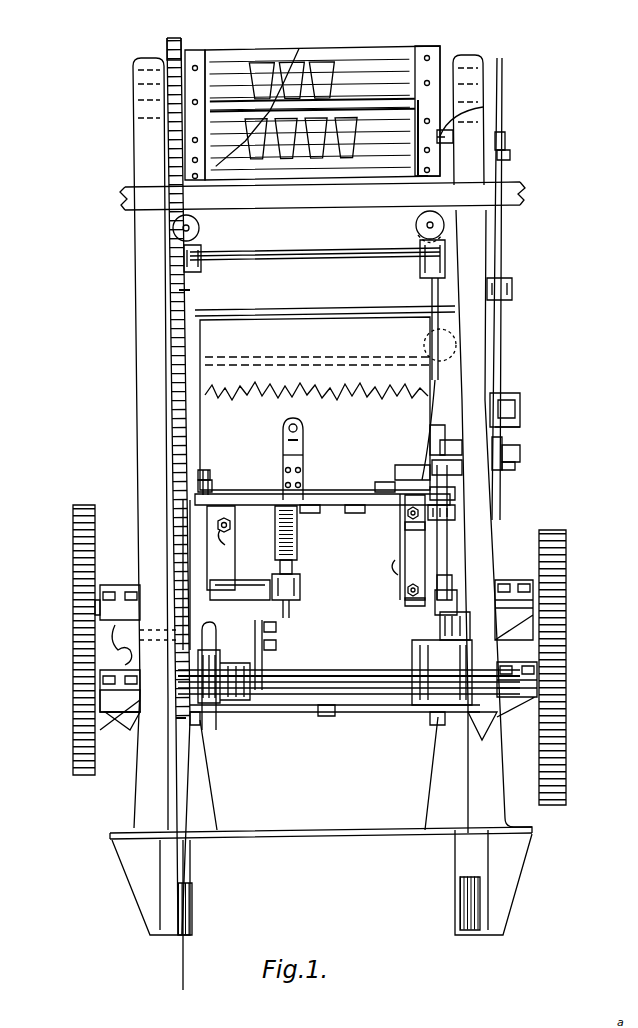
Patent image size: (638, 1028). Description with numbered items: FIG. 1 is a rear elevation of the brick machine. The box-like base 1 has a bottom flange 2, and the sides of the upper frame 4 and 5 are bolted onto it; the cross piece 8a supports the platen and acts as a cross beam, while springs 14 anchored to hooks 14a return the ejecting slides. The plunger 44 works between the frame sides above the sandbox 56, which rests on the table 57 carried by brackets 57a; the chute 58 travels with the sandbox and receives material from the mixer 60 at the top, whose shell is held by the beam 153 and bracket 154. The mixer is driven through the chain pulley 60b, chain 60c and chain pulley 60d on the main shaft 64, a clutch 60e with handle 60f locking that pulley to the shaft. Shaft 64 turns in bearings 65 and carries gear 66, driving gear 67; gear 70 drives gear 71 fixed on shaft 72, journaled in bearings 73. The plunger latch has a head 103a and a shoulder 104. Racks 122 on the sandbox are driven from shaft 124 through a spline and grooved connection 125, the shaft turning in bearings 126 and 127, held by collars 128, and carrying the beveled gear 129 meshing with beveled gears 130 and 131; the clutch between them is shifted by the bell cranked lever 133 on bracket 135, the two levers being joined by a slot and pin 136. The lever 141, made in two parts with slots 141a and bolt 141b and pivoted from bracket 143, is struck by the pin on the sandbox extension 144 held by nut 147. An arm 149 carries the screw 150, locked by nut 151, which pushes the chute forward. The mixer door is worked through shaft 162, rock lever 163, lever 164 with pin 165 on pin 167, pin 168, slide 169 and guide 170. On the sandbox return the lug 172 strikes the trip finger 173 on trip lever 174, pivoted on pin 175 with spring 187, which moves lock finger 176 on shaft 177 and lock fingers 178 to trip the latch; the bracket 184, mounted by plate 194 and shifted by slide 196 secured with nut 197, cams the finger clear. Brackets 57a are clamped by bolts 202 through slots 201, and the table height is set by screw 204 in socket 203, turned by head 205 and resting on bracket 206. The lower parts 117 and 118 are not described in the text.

The base 1 is at (135, 790).
The flange 2 is at (538, 833).
The side of upper frame 4 is at (135, 312).
The side of upper frame 5 is at (477, 341).
The cross piece 8a is at (349, 652).
The spring 14 is at (226, 544).
The hook 14a is at (228, 535).
The plunger 44 is at (325, 398).
The sandbox 56 is at (322, 486).
The table 57 is at (348, 492).
The bracket 57a is at (405, 560).
The chute 58 is at (316, 405).
The mixer 60 is at (365, 60).
The chain pulley 60b is at (185, 44).
The chain 60c is at (192, 292).
The chain pulley 60d is at (178, 722).
The clutch 60e is at (231, 673).
The operating handle 60f is at (140, 645).
The shaft 64 is at (349, 672).
The bearing 65 is at (128, 725).
The gear 66 is at (568, 689).
The gear 67 is at (568, 616).
The gear 70 is at (75, 716).
The gear 71 is at (73, 550).
The shaft 72 is at (95, 605).
The bearing 73 is at (125, 595).
The head of latch 103a is at (201, 228).
The shoulder 104 is at (416, 224).
The foot 117 is at (165, 910).
The pad 118 is at (193, 908).
The rack 122 is at (212, 482).
The shaft 124 is at (450, 540).
The spline and grooved connection 125 is at (457, 492).
The bearing 126 is at (457, 508).
The bearing 127 is at (457, 598).
The collar 128 is at (455, 582).
The beveled gear 129 is at (465, 626).
The beveled gear 130 is at (214, 660).
The beveled gear 131 is at (470, 652).
The bell cranked lever 133 is at (230, 712).
The bracket 135 is at (200, 725).
The slot and pin 136 is at (322, 717).
The lever 141 is at (262, 662).
The slot 141a is at (276, 644).
The bolt 141b is at (276, 627).
The bracket 143 is at (238, 582).
The extension 144 is at (212, 472).
The nut 147 is at (205, 468).
The arm 149 is at (285, 442).
The screw 150 is at (286, 428).
The nut 151 is at (330, 408).
The beam 153 is at (322, 196).
The bracket 154 is at (205, 178).
The shaft 162 is at (485, 106).
The rock lever 163 is at (508, 150).
The lever 164 is at (503, 252).
The pin 165 is at (512, 163).
The pin 167 is at (514, 288).
The pin 168 is at (520, 405).
The slide 169 is at (520, 420).
The guide 170 is at (508, 393).
The lug 172 is at (400, 470).
The trip finger 173 is at (462, 462).
The trip lever 174 is at (432, 438).
The pin 175 is at (430, 365).
The lock finger 176 is at (420, 275).
The shaft 177 is at (315, 246).
The lock finger 178 is at (201, 250).
The bracket 184 is at (455, 448).
The spring 187 is at (430, 420).
The plate 194 is at (515, 466).
The slide 196 is at (505, 438).
The nut 197 is at (520, 450).
The slot 201 is at (405, 512).
The bolt 202 is at (405, 530).
The socket 203 is at (300, 536).
The screw 204 is at (300, 563).
The head 205 is at (302, 578).
The bracket 206 is at (300, 600).